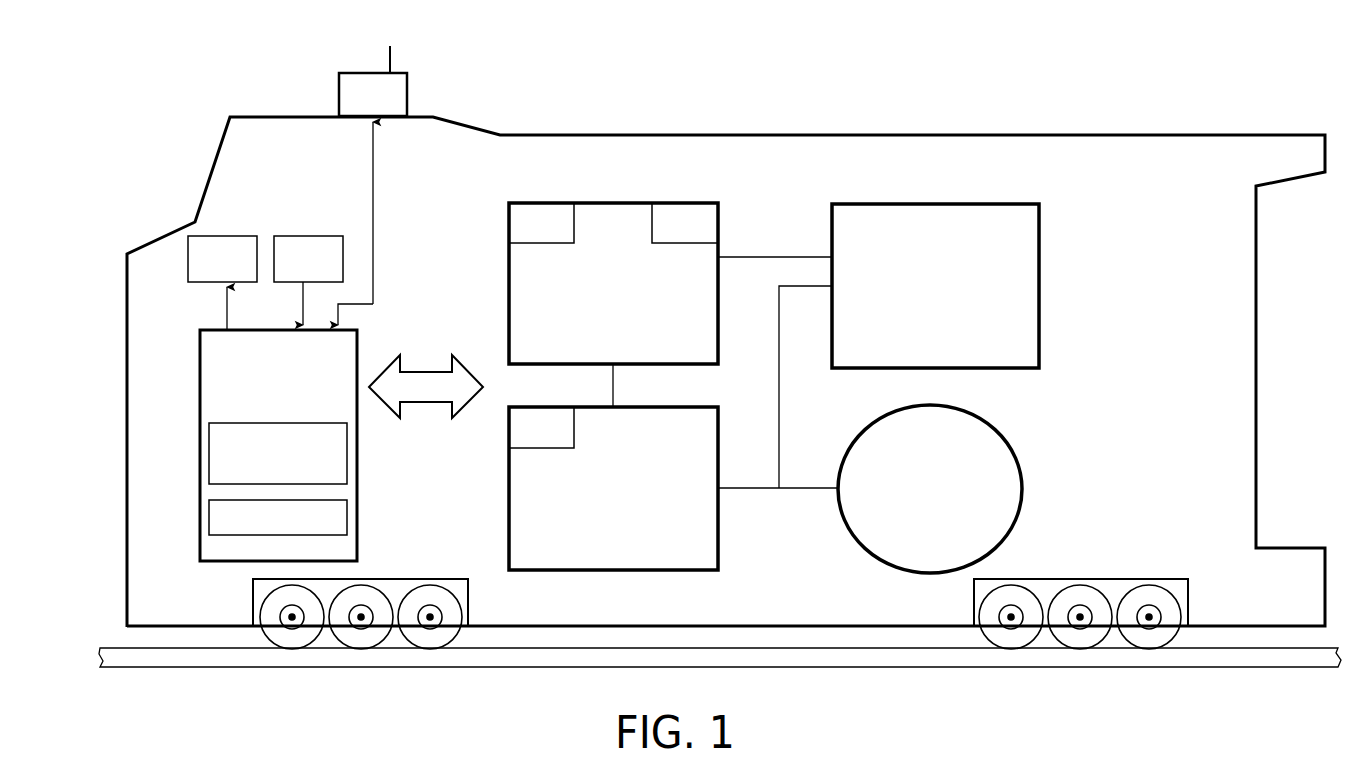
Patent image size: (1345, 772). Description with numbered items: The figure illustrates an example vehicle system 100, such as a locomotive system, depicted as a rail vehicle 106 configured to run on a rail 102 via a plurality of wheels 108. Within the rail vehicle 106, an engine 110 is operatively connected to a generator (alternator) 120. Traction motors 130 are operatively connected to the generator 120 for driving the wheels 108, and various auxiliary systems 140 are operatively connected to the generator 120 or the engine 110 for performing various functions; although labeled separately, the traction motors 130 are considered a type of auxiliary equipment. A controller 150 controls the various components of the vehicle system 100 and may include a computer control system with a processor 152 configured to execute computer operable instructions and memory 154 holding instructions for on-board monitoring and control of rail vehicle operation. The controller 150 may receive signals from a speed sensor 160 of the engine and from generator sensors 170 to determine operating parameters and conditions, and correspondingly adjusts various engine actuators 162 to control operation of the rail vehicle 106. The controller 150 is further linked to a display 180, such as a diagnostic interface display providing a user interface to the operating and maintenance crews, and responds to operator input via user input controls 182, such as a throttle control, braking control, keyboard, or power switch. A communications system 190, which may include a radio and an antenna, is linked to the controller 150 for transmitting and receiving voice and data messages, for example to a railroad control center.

The vehicle system 100 is at (726, 330).
The rail 102 is at (1255, 668).
The rail vehicle 106 is at (1010, 133).
The wheels 108 is at (462, 605).
The engine 110 is at (591, 337).
The generator (alternator) 120 is at (588, 461).
The traction motors 130 is at (907, 549).
The auxiliary systems 140 is at (917, 347).
The controller 150 is at (259, 402).
The processor 152 is at (213, 453).
The memory 154 is at (347, 507).
The speed sensor 160 is at (522, 236).
The engine actuators 162 is at (666, 236).
The generator sensors 170 is at (522, 442).
The display 180 is at (203, 269).
The user input controls 182 is at (289, 269).
The communications system 190 is at (354, 108).